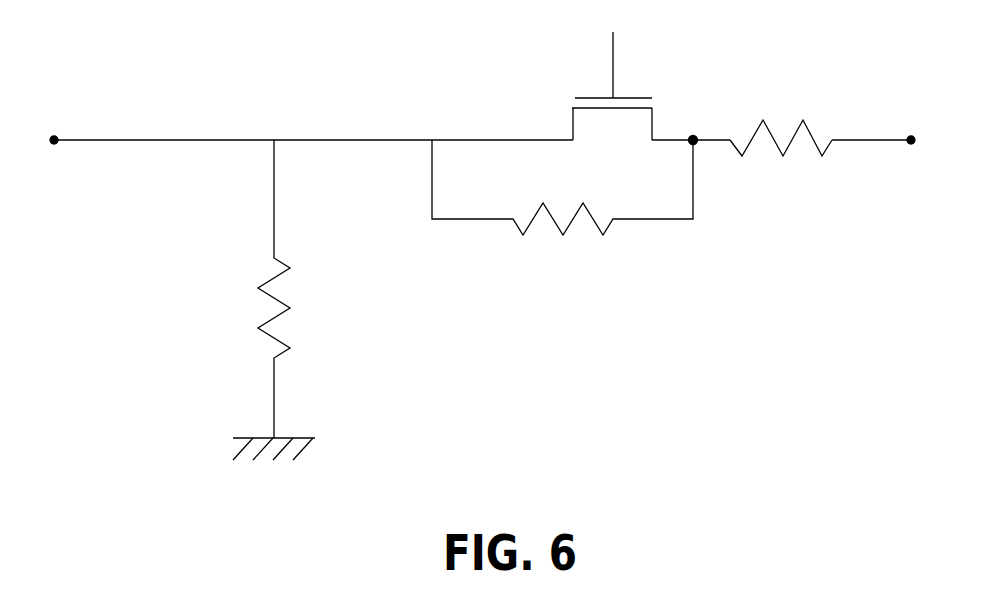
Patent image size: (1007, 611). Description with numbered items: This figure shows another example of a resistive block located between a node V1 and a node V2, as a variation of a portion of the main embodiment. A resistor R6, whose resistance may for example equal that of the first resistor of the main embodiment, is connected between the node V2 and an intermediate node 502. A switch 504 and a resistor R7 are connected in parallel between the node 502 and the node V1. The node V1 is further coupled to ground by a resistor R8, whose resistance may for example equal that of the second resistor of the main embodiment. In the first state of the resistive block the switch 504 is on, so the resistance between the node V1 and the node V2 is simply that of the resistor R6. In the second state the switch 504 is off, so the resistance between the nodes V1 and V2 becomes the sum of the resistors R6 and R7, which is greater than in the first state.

The node 502 is at (692, 123).
The switch 504 is at (636, 90).
The resistor R6 is at (781, 124).
The resistor R7 is at (562, 209).
The resistor R8 is at (284, 300).
The node V1 is at (54, 118).
The node V2 is at (917, 124).